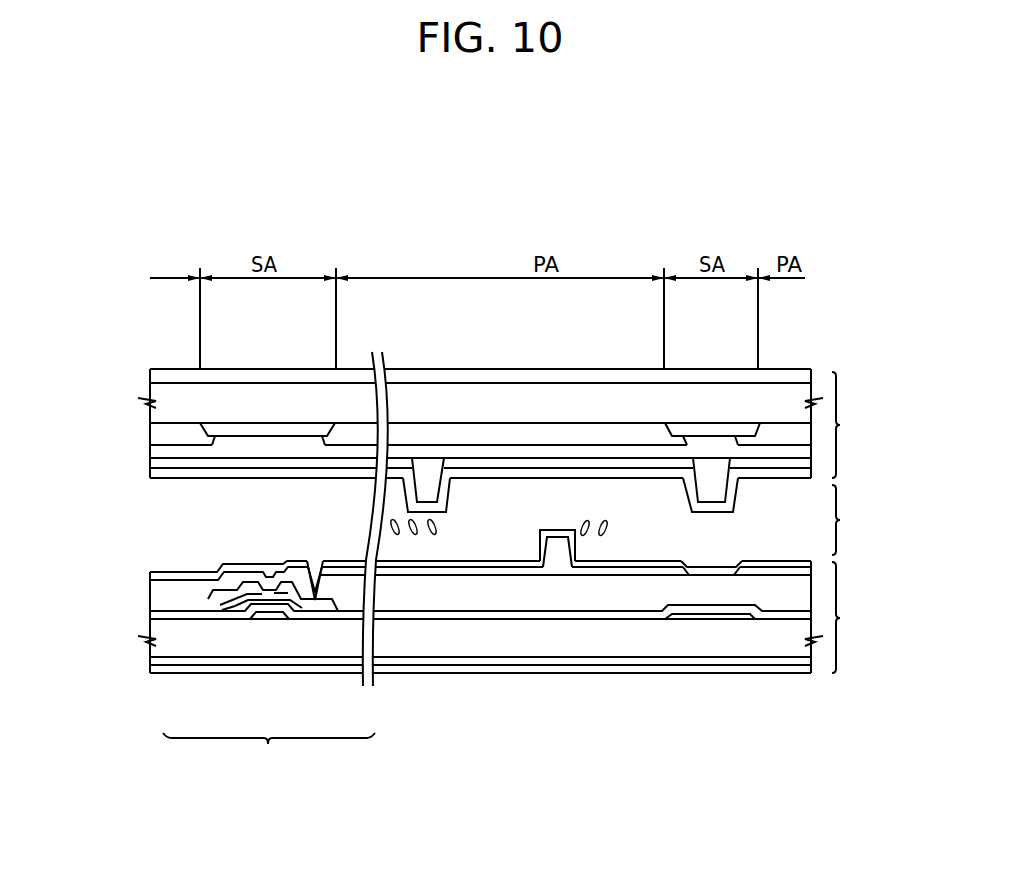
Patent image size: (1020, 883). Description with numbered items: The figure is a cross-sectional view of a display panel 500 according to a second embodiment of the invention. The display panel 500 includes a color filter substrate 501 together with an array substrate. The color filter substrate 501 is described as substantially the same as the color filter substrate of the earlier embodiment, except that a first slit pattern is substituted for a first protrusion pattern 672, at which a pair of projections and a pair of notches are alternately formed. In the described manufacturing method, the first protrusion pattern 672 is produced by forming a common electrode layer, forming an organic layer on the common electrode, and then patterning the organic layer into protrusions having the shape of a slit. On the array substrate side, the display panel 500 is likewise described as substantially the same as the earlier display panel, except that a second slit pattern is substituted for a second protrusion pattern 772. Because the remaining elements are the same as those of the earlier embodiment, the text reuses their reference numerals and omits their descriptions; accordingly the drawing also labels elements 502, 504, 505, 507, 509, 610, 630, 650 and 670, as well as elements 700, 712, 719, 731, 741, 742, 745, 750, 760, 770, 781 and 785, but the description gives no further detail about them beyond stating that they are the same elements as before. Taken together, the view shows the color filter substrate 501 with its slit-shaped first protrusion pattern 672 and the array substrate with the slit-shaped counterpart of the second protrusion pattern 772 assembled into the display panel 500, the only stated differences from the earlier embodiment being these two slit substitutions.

The display panel 500 is at (472, 159).
The color filter substrate 501 is at (507, 423).
The upper alignment layer 502 is at (150, 478).
The lower alignment layer 504 is at (150, 572).
The lower substrate 505 is at (854, 617).
The liquid crystal layer 507 is at (854, 520).
The liquid crystal molecules 509 is at (575, 540).
The black matrix 610 is at (264, 430).
The color filter 630 is at (500, 433).
The column spacer 650 is at (427, 454).
The common electrode 670 is at (641, 466).
The first protrusion pattern 672 is at (447, 498).
The base substrate 700 is at (150, 651).
The gate electrode 712 is at (263, 618).
The buffer layer 719 is at (350, 618).
The storage line 731 is at (710, 620).
The active layer 741 is at (217, 600).
The source and drain electrodes 742 is at (239, 606).
The gate insulating layer 745 is at (313, 608).
The thin film transistor 750 is at (269, 750).
The passivation layer 760 is at (150, 589).
The pixel electrode 770 is at (617, 574).
The second protrusion pattern 772 is at (557, 564).
The contact hole 781 is at (316, 577).
The recess 785 is at (700, 561).